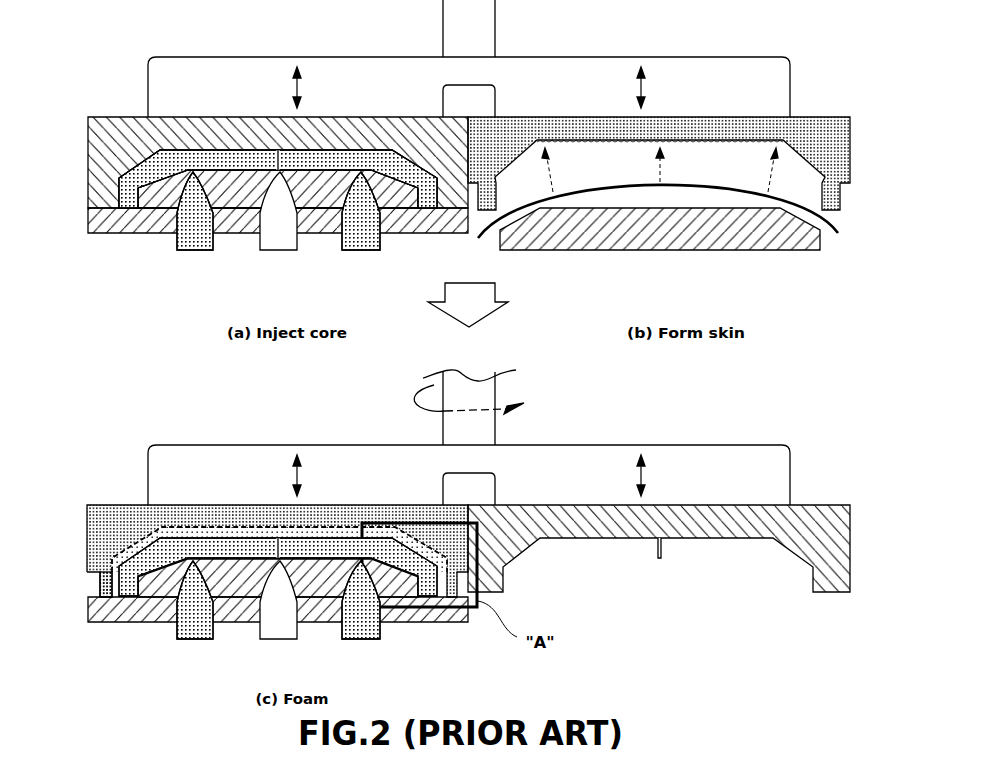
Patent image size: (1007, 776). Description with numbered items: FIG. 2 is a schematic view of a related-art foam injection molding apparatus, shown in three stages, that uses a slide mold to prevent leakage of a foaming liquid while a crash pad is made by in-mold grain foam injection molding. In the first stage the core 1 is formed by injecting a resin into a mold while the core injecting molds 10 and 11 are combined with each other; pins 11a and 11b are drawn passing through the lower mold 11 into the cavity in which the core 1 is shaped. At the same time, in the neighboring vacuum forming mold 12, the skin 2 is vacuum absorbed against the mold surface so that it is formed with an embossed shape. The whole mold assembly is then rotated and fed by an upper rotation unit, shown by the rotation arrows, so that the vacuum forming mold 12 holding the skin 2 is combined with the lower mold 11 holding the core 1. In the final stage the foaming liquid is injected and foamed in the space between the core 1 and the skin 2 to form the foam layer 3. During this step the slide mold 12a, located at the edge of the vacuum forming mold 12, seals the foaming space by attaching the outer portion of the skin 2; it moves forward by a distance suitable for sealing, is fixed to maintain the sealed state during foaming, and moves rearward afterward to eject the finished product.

The core 1 is at (152, 173).
The skin 2 is at (716, 190).
The foam layer 3 is at (193, 535).
The core injecting mold 10 is at (108, 128).
The lower mold 11 is at (120, 222).
The ejector pin 11a is at (195, 243).
The center pin (gate) 11b is at (275, 243).
The vacuum forming mold 12 is at (697, 125).
The slide mold 12a is at (108, 597).